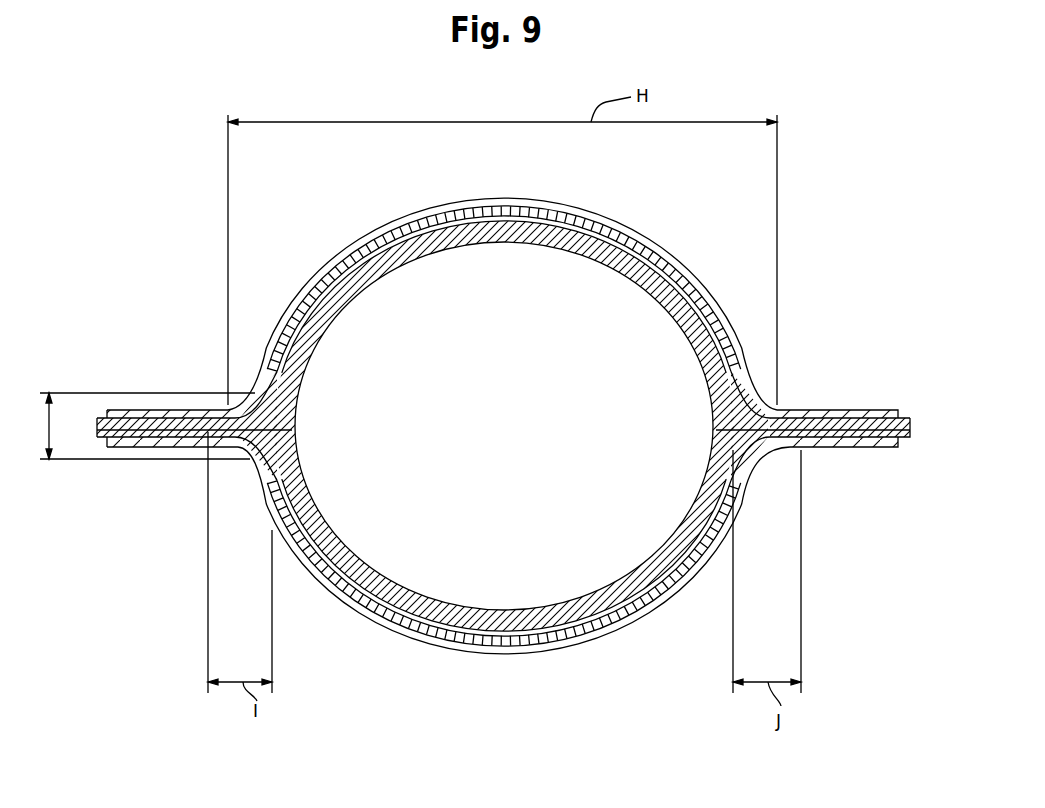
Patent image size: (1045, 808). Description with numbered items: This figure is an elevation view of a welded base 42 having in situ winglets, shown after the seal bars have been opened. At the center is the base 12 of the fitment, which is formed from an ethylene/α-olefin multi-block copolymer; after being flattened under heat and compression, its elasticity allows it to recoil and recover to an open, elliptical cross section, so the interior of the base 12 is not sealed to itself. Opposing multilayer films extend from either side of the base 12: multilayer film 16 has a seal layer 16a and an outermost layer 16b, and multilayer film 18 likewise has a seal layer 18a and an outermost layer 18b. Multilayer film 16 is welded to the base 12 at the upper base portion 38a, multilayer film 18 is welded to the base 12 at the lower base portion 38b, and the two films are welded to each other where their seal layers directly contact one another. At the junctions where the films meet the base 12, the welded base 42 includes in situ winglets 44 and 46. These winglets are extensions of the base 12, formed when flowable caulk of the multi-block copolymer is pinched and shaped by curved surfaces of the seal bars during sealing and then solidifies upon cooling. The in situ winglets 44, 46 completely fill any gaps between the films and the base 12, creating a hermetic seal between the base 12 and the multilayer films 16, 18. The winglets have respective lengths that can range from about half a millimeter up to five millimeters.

The base 12 is at (685, 251).
The multilayer film 16 is at (905, 406).
The seal layer 16a is at (97, 418).
The outermost layer 16b is at (127, 410).
The multilayer film 18 is at (893, 450).
The seal layer 18a is at (95, 437).
The outermost layer 18b is at (121, 447).
The upper base portion 38a is at (389, 225).
The lower base portion 38b is at (511, 658).
The welded base 42 is at (152, 204).
The in situ winglet 44 is at (275, 422).
The in situ winglet 46 is at (746, 414).